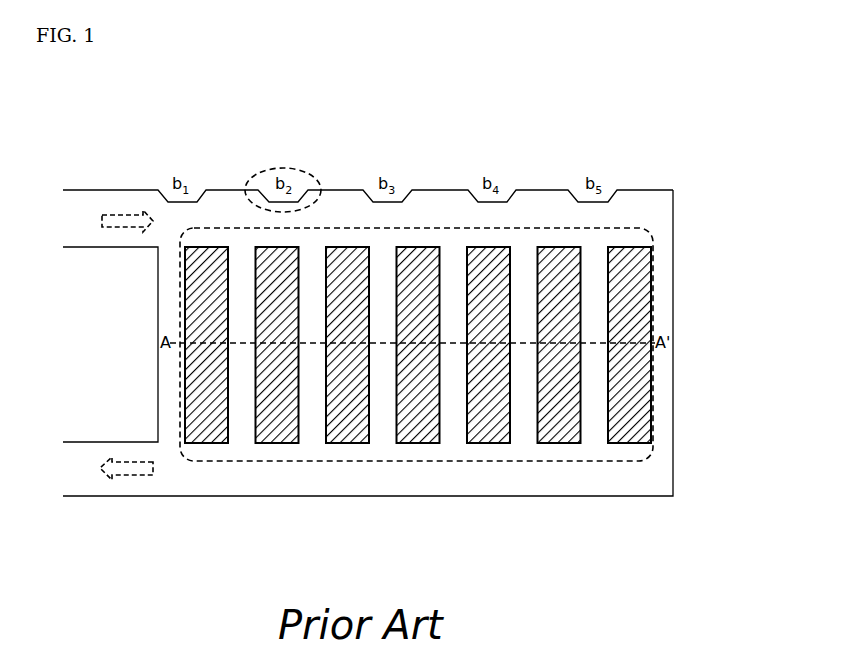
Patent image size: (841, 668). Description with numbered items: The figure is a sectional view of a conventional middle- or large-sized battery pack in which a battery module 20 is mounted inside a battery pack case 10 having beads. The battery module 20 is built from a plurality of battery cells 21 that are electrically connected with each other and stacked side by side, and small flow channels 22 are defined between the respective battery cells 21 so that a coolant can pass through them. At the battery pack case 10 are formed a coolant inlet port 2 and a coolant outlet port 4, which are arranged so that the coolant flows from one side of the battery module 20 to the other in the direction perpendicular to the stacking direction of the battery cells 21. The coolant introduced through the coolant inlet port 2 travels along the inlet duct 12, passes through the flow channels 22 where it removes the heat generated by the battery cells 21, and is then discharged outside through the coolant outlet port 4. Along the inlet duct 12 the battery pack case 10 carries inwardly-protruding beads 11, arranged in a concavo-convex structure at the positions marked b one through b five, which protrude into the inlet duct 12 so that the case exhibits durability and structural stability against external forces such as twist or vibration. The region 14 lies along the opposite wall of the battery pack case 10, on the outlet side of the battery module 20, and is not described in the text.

The coolant inlet port 2 is at (83, 227).
The coolant outlet port 4 is at (79, 477).
The battery pack case 10 is at (220, 496).
The inwardly-protruding beads 11 is at (308, 170).
The inlet duct 12 is at (437, 213).
The lower bus bar region 14 is at (383, 482).
The battery module 20 is at (652, 238).
The battery cells 21 is at (638, 445).
The flow channels 22 is at (528, 253).